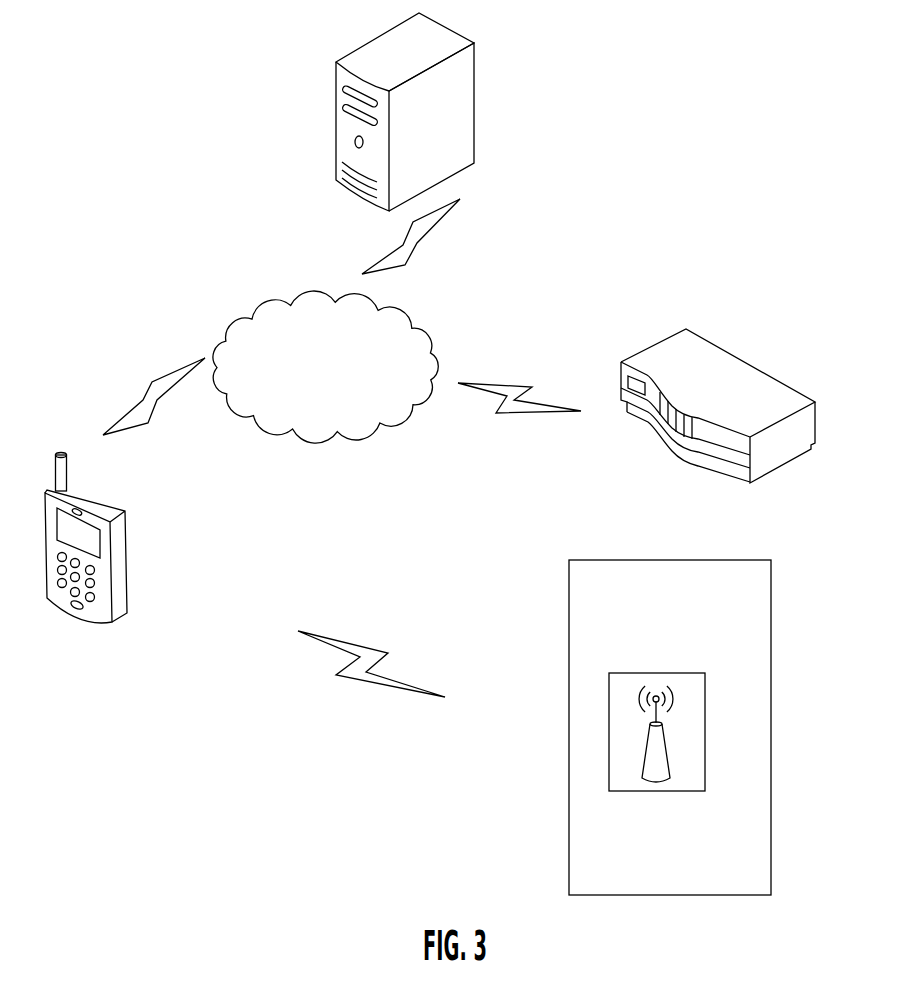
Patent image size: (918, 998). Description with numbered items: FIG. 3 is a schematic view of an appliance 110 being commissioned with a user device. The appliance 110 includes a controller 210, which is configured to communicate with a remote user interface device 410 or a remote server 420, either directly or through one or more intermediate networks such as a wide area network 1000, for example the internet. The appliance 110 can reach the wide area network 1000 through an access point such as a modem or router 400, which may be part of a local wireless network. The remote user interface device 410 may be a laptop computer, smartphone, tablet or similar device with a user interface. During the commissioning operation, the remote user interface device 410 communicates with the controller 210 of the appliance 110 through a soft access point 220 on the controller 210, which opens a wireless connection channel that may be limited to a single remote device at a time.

The appliance 110 is at (569, 797).
The controller 210 is at (609, 705).
The soft access point 220 is at (658, 757).
The router 400 is at (670, 352).
The remote user interface device 410 is at (118, 598).
The remote server 420 is at (460, 141).
The wide area network 1000 is at (323, 417).